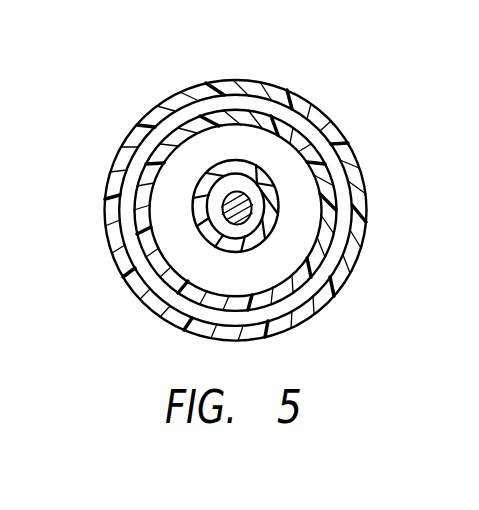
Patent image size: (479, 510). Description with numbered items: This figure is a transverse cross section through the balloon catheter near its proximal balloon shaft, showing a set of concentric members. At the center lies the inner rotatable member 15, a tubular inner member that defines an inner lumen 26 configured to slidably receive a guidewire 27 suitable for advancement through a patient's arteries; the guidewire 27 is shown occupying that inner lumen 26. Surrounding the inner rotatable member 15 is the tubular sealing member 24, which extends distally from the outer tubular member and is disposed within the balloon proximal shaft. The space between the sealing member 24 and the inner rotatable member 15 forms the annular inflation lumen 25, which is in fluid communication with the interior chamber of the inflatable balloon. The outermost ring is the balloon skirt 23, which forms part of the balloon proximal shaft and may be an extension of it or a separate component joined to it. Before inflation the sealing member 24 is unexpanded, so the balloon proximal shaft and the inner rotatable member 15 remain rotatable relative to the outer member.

The inner rotatable member 15 is at (258, 178).
The balloon skirt 23 is at (365, 175).
The tubular sealing member 24 is at (338, 206).
The annular inflation lumen 25 is at (288, 242).
The inner lumen 26 is at (215, 223).
The guidewire 27 is at (215, 202).